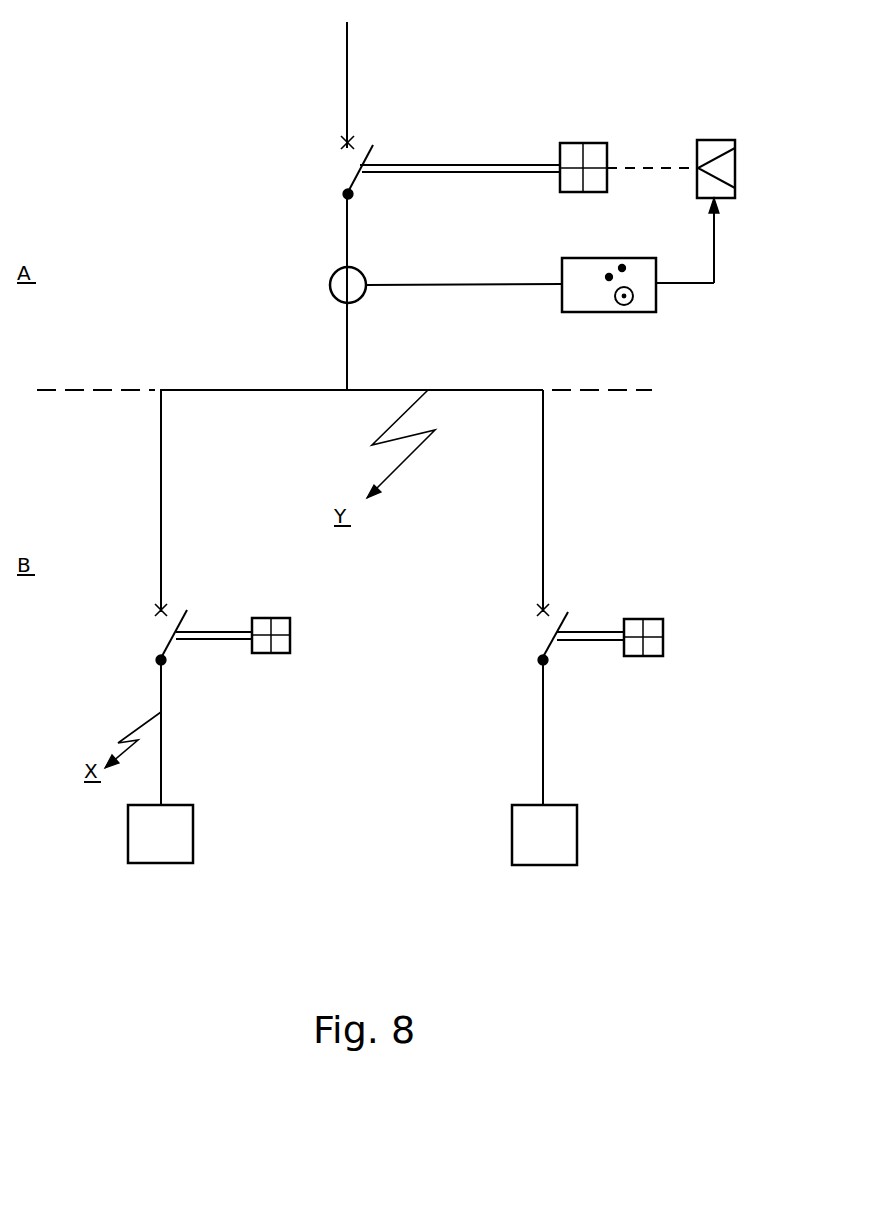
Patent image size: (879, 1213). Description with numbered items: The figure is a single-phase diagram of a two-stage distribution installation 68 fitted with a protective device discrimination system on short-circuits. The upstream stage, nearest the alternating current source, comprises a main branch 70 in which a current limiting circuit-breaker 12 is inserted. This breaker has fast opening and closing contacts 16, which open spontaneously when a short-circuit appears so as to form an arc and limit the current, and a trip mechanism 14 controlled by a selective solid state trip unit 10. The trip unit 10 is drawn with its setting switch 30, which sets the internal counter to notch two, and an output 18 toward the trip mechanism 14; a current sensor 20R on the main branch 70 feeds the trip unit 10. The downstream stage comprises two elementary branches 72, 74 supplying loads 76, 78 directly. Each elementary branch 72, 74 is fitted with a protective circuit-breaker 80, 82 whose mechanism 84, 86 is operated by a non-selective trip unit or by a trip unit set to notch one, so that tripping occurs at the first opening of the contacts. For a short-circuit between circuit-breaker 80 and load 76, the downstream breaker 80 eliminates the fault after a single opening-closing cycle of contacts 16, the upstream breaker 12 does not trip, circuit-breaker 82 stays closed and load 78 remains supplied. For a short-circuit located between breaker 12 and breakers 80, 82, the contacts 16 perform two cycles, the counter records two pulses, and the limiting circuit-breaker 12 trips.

The installation 68 is at (158, 31).
The limiting circuit-breaker 12 is at (333, 174).
The contacts 16 is at (372, 150).
The trip mechanism 14 is at (584, 143).
The transmitter 18 is at (735, 152).
The current sensor 20R is at (345, 268).
The selective solid state trip unit 10 is at (610, 312).
The setting switch 30 is at (634, 295).
The main branch 70 is at (347, 340).
The elementary branch 72 is at (160, 474).
The elementary branch 74 is at (543, 478).
The protective circuit-breaker 80 is at (148, 633).
The protective circuit-breaker 82 is at (530, 633).
The mechanism 84 is at (262, 653).
The mechanism 86 is at (633, 656).
The load 76 is at (160, 834).
The load 78 is at (544, 835).